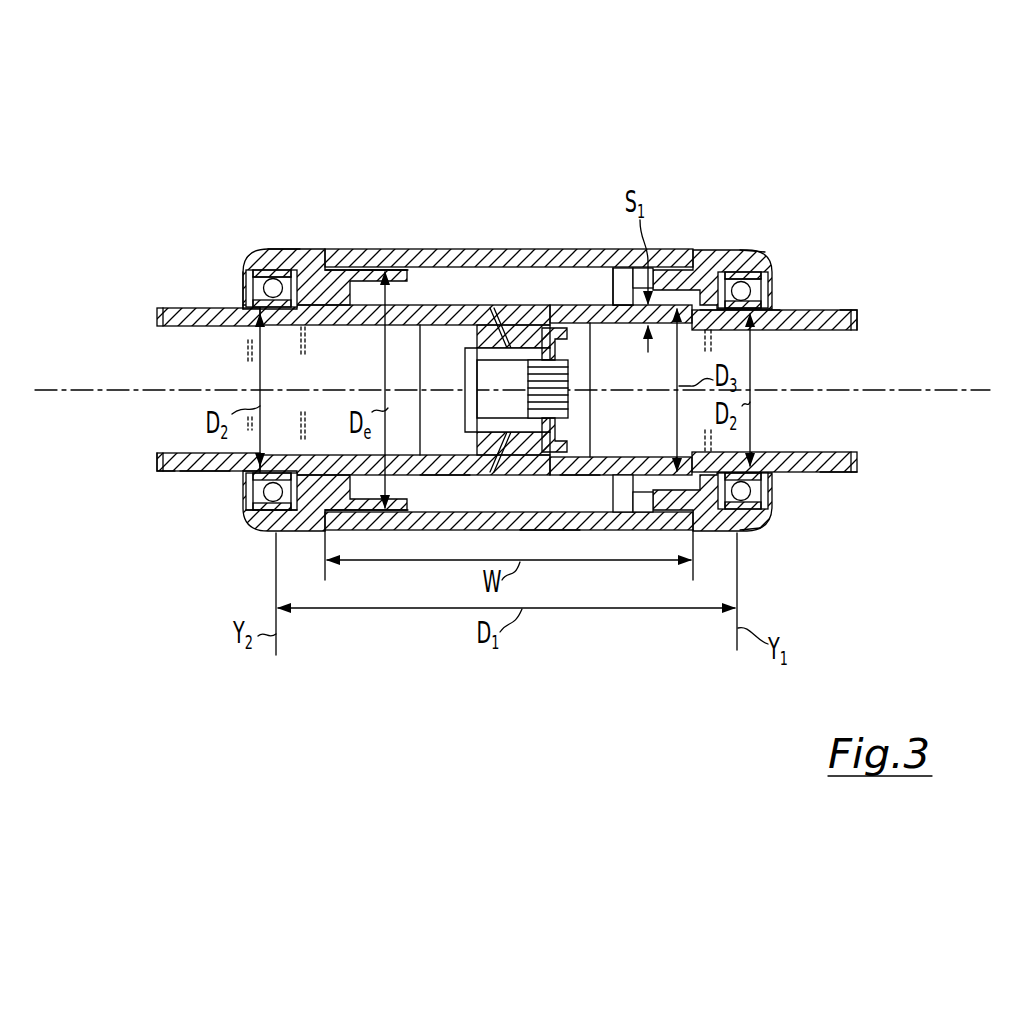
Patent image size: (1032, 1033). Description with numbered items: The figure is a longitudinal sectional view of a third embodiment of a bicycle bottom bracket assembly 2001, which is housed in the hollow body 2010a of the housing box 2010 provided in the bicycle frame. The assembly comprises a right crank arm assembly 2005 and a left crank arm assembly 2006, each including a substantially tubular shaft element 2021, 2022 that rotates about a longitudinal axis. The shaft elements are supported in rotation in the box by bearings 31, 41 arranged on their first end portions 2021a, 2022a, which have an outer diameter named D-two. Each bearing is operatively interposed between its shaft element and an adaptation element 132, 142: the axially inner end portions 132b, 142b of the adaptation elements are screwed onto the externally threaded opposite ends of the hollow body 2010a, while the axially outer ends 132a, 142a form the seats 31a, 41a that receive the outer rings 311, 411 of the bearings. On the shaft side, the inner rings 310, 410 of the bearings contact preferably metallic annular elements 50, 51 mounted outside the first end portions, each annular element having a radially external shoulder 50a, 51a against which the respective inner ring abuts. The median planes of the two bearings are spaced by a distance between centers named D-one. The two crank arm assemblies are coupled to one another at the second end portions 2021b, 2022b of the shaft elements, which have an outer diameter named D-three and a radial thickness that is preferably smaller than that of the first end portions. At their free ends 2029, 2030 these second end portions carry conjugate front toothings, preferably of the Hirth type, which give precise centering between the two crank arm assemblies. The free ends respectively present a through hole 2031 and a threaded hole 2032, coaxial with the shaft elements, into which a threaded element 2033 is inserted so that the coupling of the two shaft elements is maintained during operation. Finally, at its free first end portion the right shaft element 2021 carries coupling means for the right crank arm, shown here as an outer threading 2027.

The bottom bracket assembly 2001 is at (528, 156).
The left crank arm assembly 2006 is at (377, 156).
The right crank arm assembly 2005 is at (700, 185).
The housing box 2010 is at (427, 248).
The hollow body 2010a is at (555, 512).
The shaft element 2022 is at (178, 348).
The first end portion 2022a is at (205, 477).
The second end portion 2022b is at (450, 480).
The shaft element 2021 is at (838, 378).
The first end portion 2021a is at (832, 478).
The second end portion 2021b is at (570, 480).
The outer threading 2027 is at (162, 472).
The adaptation element 142 is at (310, 252).
The axially outer end 142a is at (287, 256).
The axially inner end portion 142b is at (373, 268).
The bearing 41 is at (243, 276).
The outer ring 411 is at (262, 272).
The inner ring 410 is at (252, 298).
The seat 41a is at (250, 510).
The annular element 51 is at (283, 316).
The shoulder 51a is at (256, 314).
The adaptation element 132 is at (717, 262).
The axially outer end 132a is at (776, 262).
The axially inner end portion 132b is at (628, 287).
The bearing 31 is at (765, 258).
The outer ring 311 is at (752, 275).
The inner ring 310 is at (755, 289).
The seat 31a is at (757, 508).
The annular element 50 is at (740, 322).
The shoulder 50a is at (762, 319).
The threaded hole 2032 is at (483, 357).
The free end 2029 is at (517, 330).
The free end 2030 is at (490, 338).
The through hole 2031 is at (568, 347).
The threaded element 2033 is at (565, 428).